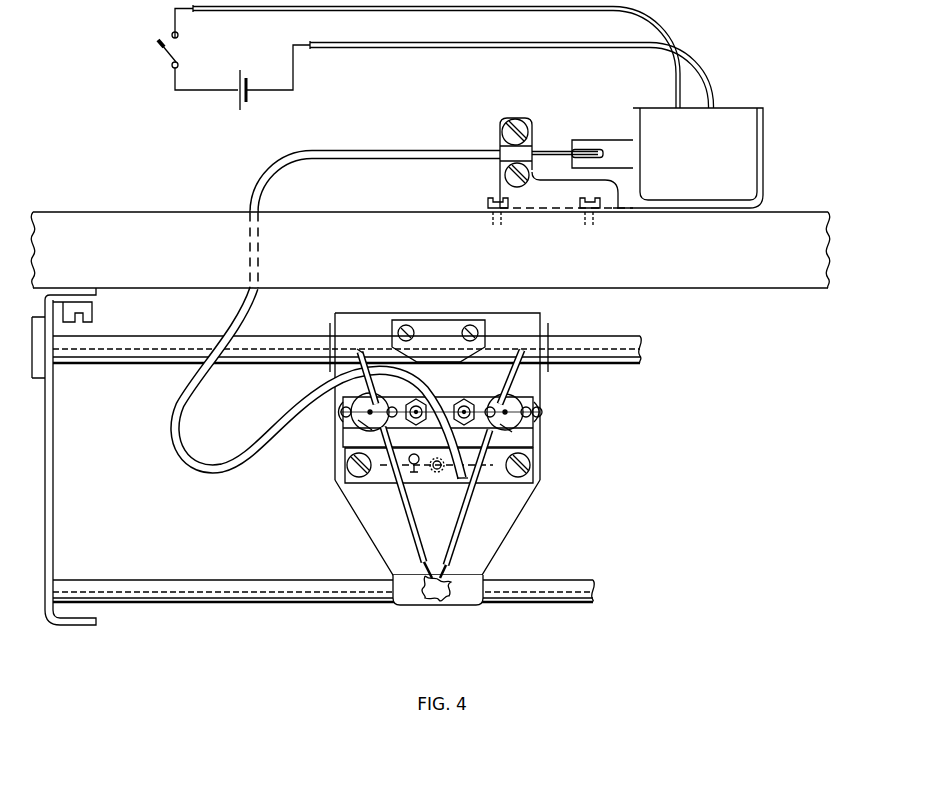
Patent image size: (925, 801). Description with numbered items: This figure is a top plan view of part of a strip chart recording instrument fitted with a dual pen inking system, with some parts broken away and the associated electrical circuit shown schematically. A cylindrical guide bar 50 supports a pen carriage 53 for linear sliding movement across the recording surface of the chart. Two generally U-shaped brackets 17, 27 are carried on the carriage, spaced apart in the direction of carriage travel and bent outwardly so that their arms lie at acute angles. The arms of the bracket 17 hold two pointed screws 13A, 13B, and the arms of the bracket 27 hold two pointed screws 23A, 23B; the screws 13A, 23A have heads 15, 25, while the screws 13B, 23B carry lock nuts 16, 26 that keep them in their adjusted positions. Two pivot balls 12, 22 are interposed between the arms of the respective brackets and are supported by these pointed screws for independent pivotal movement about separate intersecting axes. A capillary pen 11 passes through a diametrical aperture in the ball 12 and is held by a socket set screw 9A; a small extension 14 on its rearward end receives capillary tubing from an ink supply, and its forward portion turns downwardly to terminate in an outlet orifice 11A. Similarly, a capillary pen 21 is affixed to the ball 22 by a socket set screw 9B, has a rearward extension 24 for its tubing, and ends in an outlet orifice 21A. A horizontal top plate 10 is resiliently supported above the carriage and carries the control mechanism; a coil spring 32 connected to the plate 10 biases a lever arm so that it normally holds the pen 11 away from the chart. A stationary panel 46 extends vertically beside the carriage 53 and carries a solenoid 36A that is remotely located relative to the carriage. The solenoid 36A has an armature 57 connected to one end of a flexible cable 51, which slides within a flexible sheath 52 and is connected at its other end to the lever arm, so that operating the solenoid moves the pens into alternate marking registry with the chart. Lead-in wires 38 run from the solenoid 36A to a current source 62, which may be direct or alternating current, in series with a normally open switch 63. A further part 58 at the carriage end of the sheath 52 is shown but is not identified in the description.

The socket set screw 9A is at (341, 410).
The socket set screw 9B is at (488, 404).
The top plate 10 is at (540, 481).
The capillary pen 11 is at (407, 508).
The outlet orifice 11A is at (437, 566).
The pivot ball 12 is at (380, 402).
The pointed screw 13A is at (352, 421).
The pointed screw 13B is at (378, 427).
The extension 14 is at (367, 364).
The head 15 is at (340, 413).
The lock nut 16 is at (416, 428).
The U-shaped bracket 17 is at (352, 428).
The capillary pen 21 is at (472, 508).
The outlet orifice 21A is at (441, 565).
The pivot ball 22 is at (522, 400).
The pointed screw 23A is at (528, 406).
The pointed screw 23B is at (498, 429).
The extension 24 is at (512, 378).
The head 25 is at (532, 410).
The lock nut 26 is at (459, 401).
The U-shaped bracket 27 is at (541, 418).
The coil spring 32 is at (416, 472).
The solenoid 36A is at (733, 158).
The lead-in wires 38 is at (713, 83).
The stationary panel 46 is at (722, 258).
The cylindrical guide bar 50 is at (148, 357).
The flexible cable 51 is at (556, 150).
The flexible sheath 52 is at (428, 150).
The pen carriage 53 is at (548, 330).
The armature 57 is at (622, 140).
The terminal block 58 is at (521, 120).
The current source 62 is at (238, 100).
The normally open switch 63 is at (164, 52).